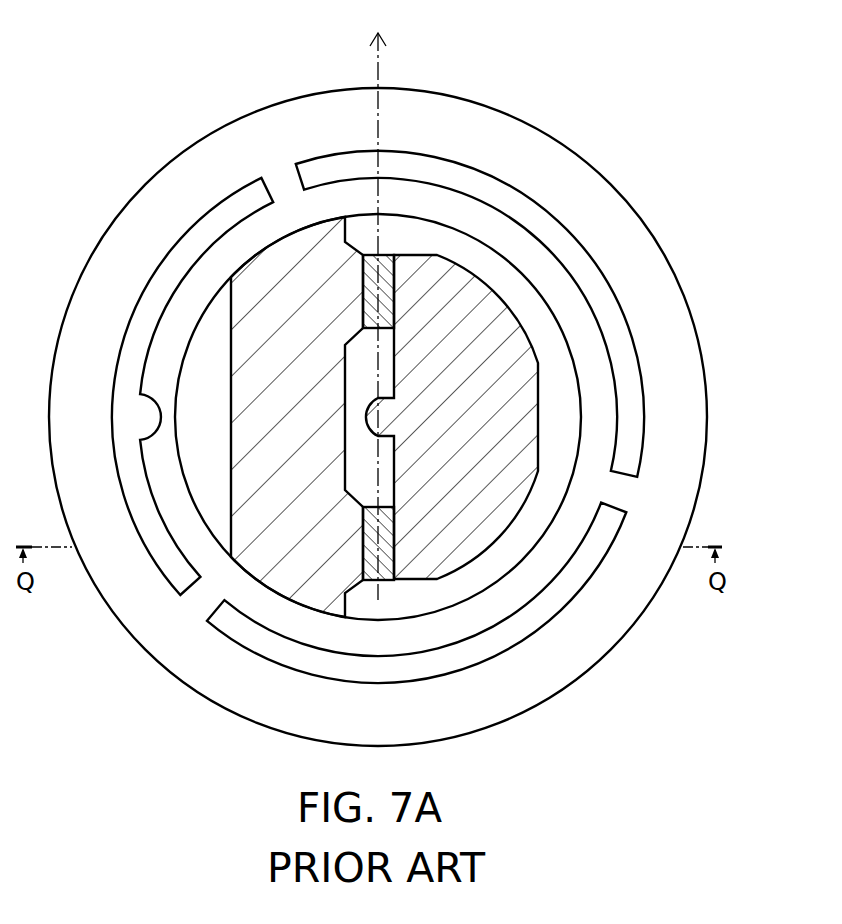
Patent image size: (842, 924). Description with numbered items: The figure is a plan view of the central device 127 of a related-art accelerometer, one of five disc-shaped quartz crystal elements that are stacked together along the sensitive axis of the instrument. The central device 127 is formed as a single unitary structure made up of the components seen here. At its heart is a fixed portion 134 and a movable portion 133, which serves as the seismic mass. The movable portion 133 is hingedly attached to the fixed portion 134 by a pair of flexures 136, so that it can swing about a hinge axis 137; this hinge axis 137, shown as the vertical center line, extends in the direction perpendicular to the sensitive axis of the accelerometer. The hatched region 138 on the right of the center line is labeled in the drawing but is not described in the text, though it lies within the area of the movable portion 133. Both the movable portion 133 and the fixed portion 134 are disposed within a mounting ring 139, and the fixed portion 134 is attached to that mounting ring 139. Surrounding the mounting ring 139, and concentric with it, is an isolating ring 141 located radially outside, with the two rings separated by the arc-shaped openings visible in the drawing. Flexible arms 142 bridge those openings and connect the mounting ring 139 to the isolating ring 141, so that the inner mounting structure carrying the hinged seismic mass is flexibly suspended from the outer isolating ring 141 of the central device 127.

The central device 127 is at (704, 338).
The movable portion 133 is at (523, 337).
The fixed portion 134 is at (253, 312).
The flexures 136 is at (364, 285).
The hinge axis 137 is at (383, 305).
The second magnet section 138 is at (446, 297).
The mounting ring 139 is at (542, 572).
The isolating ring 141 is at (680, 420).
The flexible arms 142 is at (207, 605).